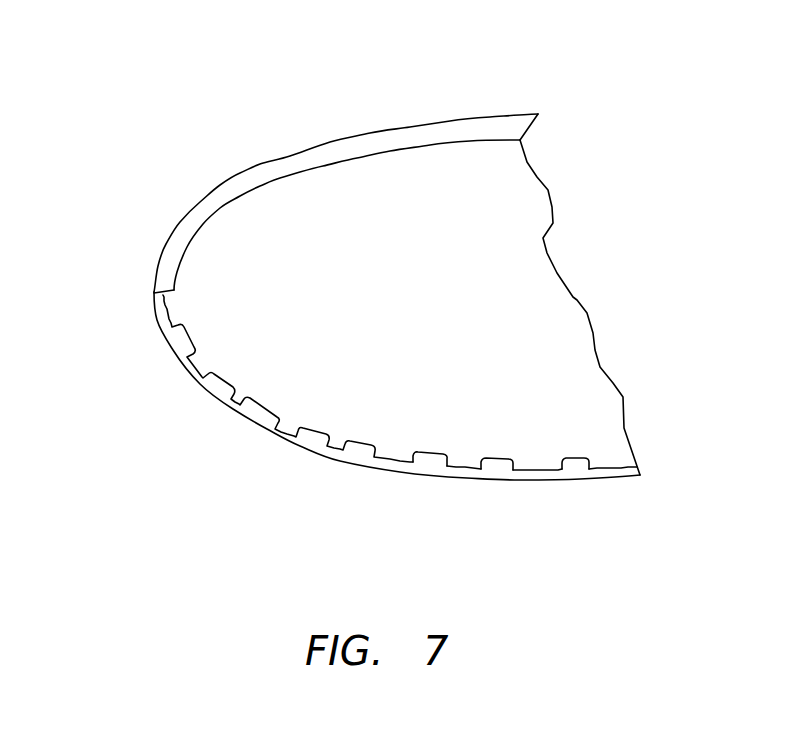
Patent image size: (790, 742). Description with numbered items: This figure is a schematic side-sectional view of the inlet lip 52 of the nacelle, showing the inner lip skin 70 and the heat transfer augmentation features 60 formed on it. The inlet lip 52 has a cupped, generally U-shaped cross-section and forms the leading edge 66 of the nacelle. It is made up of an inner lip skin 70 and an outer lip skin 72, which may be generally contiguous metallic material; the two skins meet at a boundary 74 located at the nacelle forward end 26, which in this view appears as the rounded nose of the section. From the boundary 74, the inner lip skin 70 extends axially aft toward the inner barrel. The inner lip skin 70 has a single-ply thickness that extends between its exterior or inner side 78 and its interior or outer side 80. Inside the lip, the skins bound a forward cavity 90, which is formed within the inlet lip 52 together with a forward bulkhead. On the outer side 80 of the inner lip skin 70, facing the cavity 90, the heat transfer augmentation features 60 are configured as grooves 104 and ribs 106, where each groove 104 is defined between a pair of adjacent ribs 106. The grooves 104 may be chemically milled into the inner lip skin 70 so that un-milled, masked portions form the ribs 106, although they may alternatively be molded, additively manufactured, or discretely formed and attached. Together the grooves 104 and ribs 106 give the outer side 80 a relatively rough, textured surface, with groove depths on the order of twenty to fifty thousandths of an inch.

The nacelle forward end 26 is at (155, 274).
The inlet lip 52 is at (437, 100).
The heat transfer augmentation features 60 is at (160, 364).
The leading edge 66 is at (118, 235).
The inner lip skin 70 is at (322, 460).
The outer lip skin 72 is at (310, 147).
The boundary 74 is at (118, 235).
The exterior/inner side 78 is at (577, 480).
The interior/outer side 80 is at (584, 442).
The forward cavity 90 is at (409, 278).
The grooves 104 is at (464, 472).
The ribs 106 is at (497, 452).